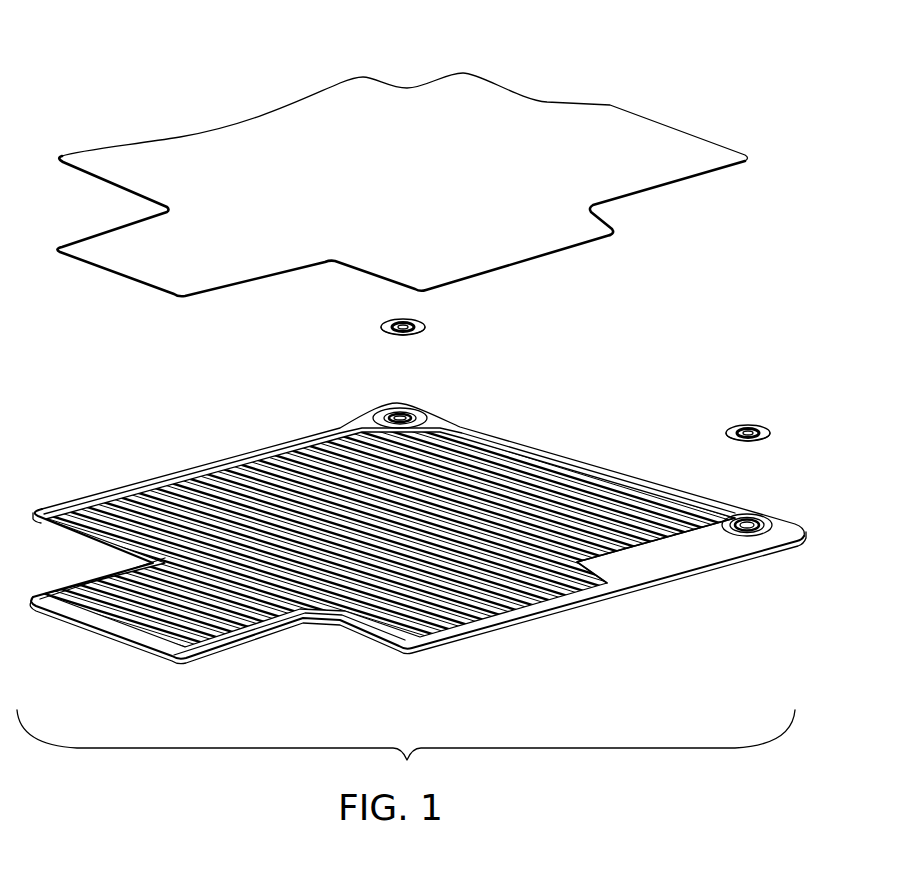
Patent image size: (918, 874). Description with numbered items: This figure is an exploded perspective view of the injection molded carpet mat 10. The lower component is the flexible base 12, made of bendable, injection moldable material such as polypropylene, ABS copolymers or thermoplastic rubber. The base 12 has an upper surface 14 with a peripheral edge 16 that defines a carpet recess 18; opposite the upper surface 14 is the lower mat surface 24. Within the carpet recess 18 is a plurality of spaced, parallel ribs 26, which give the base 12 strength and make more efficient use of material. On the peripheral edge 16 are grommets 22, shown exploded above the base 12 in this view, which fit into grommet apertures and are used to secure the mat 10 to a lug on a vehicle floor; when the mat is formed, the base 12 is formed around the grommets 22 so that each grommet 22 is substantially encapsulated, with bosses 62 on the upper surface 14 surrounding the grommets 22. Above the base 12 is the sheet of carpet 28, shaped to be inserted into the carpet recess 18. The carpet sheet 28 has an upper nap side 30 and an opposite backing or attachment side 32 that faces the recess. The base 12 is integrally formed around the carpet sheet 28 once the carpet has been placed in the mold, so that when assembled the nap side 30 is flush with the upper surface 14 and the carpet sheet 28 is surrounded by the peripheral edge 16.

The carpet mat 10 is at (206, 84).
The flexible base 12 is at (655, 572).
The upper surface 14 is at (590, 462).
The peripheral edge 16 is at (745, 508).
The carpet recess 18 is at (316, 460).
The grommet 22 is at (421, 320).
The lower mat surface 24 is at (513, 628).
The ribs 26 is at (478, 445).
The carpet sheet 28 is at (727, 167).
The upper nap side 30 is at (390, 100).
The backing or attachment side 32 is at (567, 250).
The bosses 62 is at (770, 528).